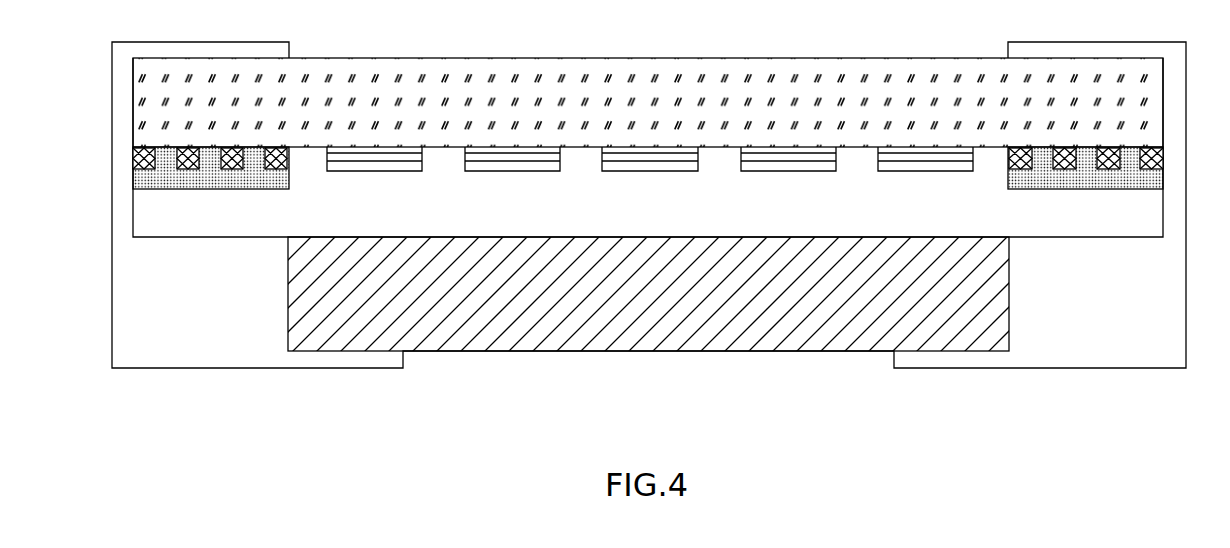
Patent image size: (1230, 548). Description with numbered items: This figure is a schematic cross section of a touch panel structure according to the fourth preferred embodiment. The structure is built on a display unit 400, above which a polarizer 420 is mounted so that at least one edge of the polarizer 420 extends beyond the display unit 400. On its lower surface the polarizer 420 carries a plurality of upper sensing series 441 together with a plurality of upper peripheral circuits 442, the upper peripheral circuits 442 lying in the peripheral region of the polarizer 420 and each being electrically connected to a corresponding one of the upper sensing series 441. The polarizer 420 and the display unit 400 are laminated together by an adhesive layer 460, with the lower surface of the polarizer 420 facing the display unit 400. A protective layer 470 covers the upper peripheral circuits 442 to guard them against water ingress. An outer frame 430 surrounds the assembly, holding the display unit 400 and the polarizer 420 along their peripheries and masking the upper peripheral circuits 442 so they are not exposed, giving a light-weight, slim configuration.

The display unit 400 is at (556, 302).
The polarizer 420 is at (532, 100).
The outer frame 430 is at (219, 338).
The upper sensing series 441 is at (362, 155).
The upper peripheral circuits 442 is at (225, 160).
The adhesive layer 460 is at (706, 214).
The protective layer 470 is at (1047, 178).